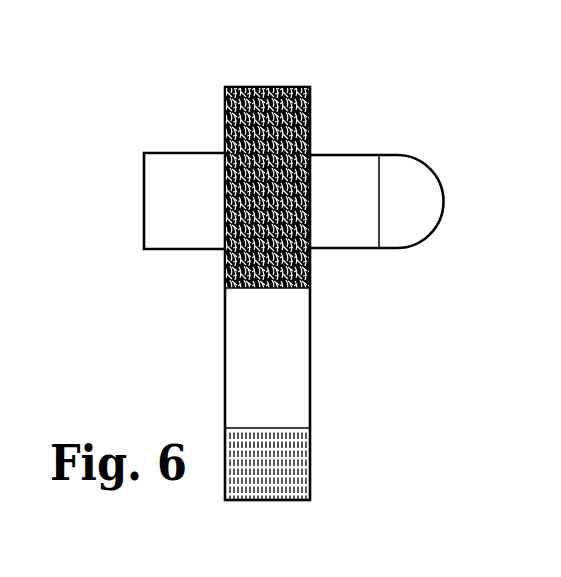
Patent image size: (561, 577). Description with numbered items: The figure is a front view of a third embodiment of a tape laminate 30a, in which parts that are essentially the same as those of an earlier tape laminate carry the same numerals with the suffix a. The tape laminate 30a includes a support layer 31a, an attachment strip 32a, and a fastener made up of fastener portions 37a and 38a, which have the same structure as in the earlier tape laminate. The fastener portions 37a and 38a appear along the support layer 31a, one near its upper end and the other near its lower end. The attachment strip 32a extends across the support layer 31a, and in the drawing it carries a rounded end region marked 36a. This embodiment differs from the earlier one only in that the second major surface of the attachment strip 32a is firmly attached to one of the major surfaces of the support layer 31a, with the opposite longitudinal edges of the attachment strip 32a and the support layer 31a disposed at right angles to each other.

The tape laminate 30a is at (368, 112).
The support layer 31a is at (285, 350).
The attachment strip 32a is at (181, 172).
The rounded end arm 36a is at (427, 203).
The fastener portion 37a is at (273, 85).
The fastener portion 38a is at (282, 468).